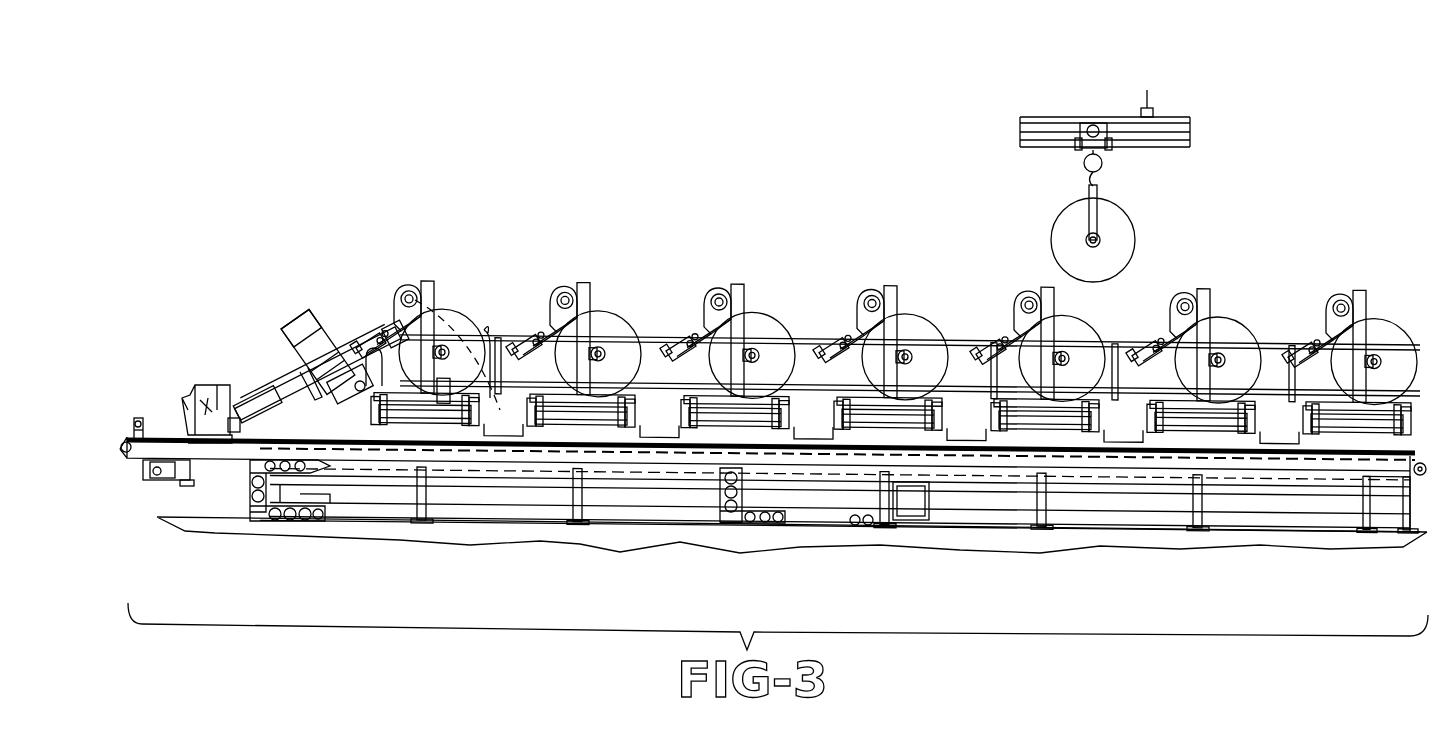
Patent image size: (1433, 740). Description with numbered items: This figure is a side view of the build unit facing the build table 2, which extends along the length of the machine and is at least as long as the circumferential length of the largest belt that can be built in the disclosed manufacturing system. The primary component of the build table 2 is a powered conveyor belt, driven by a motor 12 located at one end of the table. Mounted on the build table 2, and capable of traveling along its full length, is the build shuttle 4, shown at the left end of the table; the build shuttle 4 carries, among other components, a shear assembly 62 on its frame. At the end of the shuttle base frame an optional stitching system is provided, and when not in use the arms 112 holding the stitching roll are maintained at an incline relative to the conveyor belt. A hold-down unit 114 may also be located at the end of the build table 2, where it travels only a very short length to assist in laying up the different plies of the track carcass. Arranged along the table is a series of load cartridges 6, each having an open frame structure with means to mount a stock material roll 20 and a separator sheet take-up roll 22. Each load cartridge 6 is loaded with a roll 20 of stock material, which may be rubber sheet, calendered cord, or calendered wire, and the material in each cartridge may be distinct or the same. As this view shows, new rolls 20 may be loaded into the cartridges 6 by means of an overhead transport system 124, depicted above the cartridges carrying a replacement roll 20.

The build table 2 is at (1313, 463).
The build shuttle 4 is at (272, 376).
The load cartridge 6 is at (436, 291).
The motor 12 is at (182, 483).
The stock material roll 20 is at (1113, 216).
The separator sheet take-up roll 22 is at (566, 292).
The shear assembly 62 is at (320, 333).
The arms 112 is at (188, 437).
The hold-down unit 114 is at (137, 418).
The overhead transport system 124 is at (1192, 106).